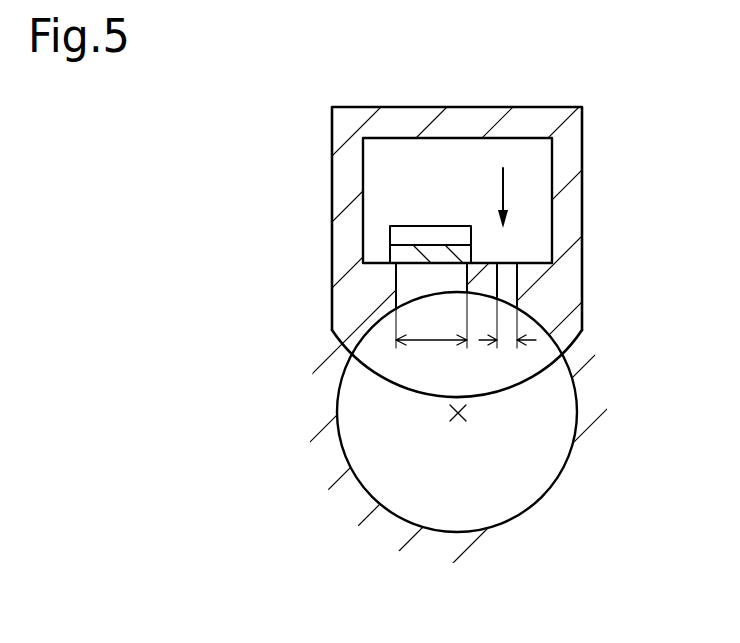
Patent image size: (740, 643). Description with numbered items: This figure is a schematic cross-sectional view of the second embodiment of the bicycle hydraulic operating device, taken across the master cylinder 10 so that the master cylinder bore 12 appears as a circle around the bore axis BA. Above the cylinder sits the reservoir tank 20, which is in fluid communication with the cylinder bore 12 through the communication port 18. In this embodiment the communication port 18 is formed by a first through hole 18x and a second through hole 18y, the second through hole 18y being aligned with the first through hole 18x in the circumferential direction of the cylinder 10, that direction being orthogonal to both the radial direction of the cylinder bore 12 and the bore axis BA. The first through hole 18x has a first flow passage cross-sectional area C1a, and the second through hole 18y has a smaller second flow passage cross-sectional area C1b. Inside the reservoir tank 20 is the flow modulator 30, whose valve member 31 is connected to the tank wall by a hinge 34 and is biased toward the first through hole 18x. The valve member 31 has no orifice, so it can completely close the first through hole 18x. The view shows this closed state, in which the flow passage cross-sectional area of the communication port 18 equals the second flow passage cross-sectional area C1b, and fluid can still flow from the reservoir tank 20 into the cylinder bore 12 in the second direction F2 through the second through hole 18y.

The master cylinder 10 is at (595, 387).
The master cylinder bore 12 is at (367, 341).
The communication port 18 is at (544, 283).
The first through hole 18x is at (470, 269).
The second through hole 18y is at (519, 292).
The reservoir tank 20 is at (572, 158).
The flow modulator 30 is at (352, 236).
The valve member 31 is at (392, 253).
The hinge 34 is at (392, 234).
The bore axis BA is at (459, 419).
The second direction F2 is at (521, 198).
The first flow passage cross-sectional area C1a is at (431, 335).
The second flow passage cross-sectional area C1b is at (507, 342).